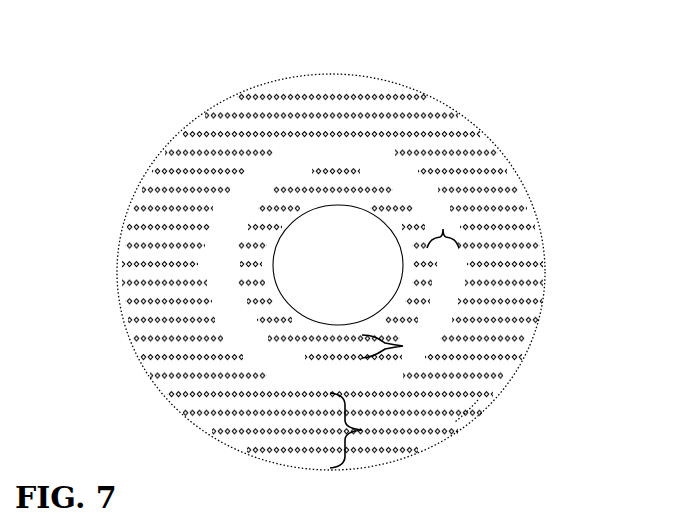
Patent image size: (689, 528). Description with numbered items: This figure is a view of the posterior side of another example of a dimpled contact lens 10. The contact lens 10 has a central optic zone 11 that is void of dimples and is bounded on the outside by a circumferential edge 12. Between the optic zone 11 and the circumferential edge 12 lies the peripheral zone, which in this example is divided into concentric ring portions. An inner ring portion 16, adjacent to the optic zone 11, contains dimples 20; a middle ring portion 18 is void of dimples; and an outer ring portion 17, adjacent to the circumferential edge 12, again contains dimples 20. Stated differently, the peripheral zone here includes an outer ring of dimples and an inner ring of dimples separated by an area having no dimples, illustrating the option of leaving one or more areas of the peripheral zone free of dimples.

The contact lens 10 is at (405, 78).
The optic zone 11 is at (367, 240).
The circumferential edge 12 is at (483, 405).
The inner ring portion 16 is at (410, 347).
The outer ring portion 17 is at (362, 432).
The middle ring portion 18 is at (442, 225).
The dimples 20 is at (415, 282).